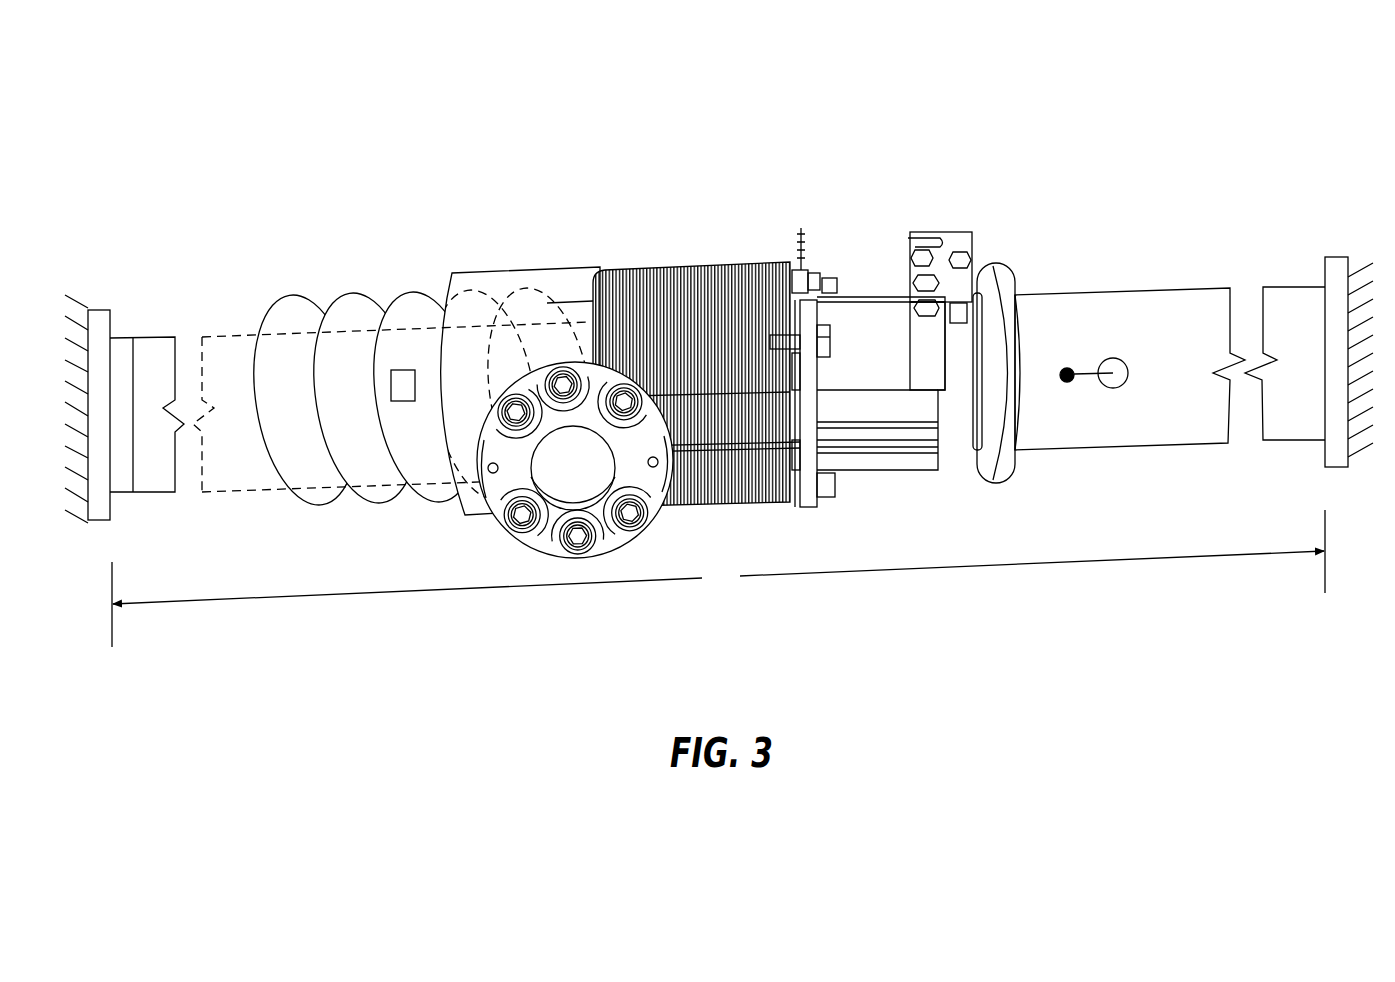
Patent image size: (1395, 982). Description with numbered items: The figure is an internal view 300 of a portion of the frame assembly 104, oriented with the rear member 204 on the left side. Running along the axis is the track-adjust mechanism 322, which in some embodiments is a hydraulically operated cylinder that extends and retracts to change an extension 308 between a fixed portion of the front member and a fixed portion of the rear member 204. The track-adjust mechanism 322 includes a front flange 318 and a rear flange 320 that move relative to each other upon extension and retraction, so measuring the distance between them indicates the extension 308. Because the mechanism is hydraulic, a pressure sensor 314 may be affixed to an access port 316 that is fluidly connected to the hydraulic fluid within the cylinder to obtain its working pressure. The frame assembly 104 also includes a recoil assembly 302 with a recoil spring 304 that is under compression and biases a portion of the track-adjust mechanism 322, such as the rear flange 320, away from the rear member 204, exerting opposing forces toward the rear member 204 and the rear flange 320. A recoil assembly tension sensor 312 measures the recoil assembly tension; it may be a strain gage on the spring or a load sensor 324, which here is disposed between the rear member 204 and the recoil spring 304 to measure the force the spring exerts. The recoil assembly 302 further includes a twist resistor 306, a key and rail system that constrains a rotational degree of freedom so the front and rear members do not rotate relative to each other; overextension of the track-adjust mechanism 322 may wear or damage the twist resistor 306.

The frame assembly 104 is at (1137, 195).
The rear member 204 is at (102, 308).
The internal view 300 is at (240, 158).
The recoil assembly 302 is at (222, 212).
The recoil spring 304 is at (348, 293).
The twist resistor 306 is at (553, 475).
The extension 308 is at (718, 578).
The recoil assembly tension sensor 312 is at (403, 370).
The pressure sensor 314 is at (1114, 358).
The access port 316 is at (1067, 368).
The front flange 318 is at (990, 263).
The rear flange 320 is at (797, 257).
The track-adjust mechanism 322 is at (1113, 278).
The load sensor 324 is at (120, 338).